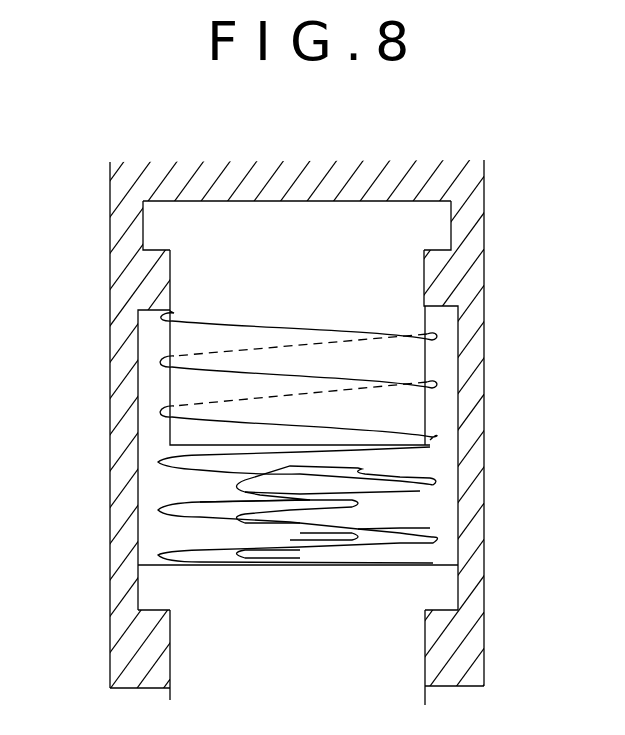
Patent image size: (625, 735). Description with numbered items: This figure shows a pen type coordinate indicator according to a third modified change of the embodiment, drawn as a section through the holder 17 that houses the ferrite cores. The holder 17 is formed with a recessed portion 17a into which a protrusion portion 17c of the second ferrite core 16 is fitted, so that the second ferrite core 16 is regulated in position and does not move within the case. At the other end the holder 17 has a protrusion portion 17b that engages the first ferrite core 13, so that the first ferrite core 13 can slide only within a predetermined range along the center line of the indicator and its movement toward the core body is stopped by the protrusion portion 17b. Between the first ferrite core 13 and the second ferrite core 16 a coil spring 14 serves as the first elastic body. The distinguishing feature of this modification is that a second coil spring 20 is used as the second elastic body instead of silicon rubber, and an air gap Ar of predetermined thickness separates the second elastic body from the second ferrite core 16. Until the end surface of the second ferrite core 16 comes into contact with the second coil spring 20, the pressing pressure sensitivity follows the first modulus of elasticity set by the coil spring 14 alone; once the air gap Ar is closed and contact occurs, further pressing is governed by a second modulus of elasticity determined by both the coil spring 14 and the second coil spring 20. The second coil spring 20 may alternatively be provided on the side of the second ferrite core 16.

The first ferrite core 13 is at (325, 583).
The coil spring 14 is at (433, 384).
The second ferrite core 16 is at (261, 226).
The holder 17 is at (452, 180).
The recessed portion 17a is at (452, 220).
The protrusion portion 17b is at (461, 645).
The protrusion portion 17c is at (437, 272).
The second coil spring 20 is at (352, 465).
The air gap Ar is at (207, 483).